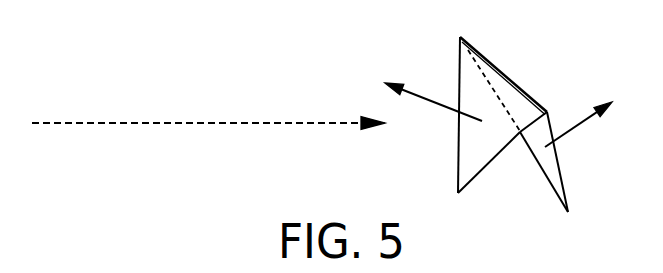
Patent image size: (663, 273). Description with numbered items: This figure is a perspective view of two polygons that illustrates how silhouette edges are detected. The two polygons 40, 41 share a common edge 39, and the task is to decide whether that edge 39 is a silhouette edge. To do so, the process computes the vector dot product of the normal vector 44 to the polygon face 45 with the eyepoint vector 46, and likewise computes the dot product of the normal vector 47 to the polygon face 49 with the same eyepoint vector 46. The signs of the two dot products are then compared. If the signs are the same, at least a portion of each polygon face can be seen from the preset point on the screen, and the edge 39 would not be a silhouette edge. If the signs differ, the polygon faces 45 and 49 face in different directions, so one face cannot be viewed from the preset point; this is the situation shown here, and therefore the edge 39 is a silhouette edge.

The edge 39 is at (500, 69).
The polygon 40 is at (458, 71).
The polygon 41 is at (562, 157).
The normal vector 44 is at (423, 102).
The polygon face 45 is at (477, 160).
The eyepoint vector 46 is at (153, 124).
The normal vector 47 is at (570, 124).
The polygon face 49 is at (550, 162).